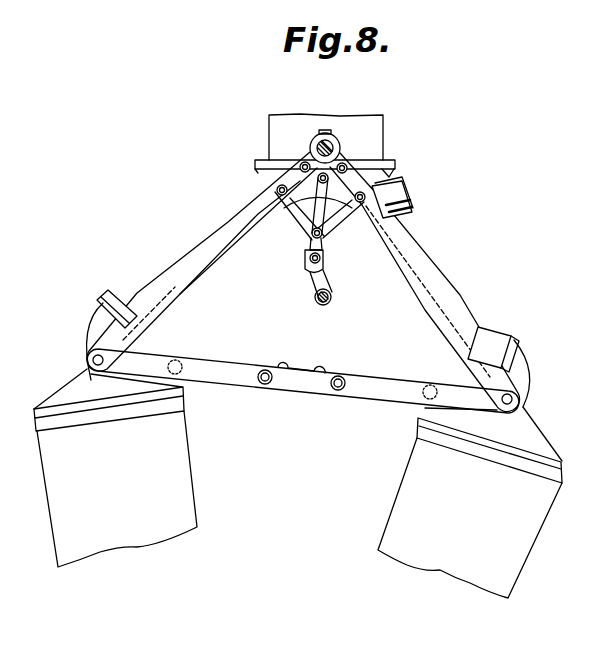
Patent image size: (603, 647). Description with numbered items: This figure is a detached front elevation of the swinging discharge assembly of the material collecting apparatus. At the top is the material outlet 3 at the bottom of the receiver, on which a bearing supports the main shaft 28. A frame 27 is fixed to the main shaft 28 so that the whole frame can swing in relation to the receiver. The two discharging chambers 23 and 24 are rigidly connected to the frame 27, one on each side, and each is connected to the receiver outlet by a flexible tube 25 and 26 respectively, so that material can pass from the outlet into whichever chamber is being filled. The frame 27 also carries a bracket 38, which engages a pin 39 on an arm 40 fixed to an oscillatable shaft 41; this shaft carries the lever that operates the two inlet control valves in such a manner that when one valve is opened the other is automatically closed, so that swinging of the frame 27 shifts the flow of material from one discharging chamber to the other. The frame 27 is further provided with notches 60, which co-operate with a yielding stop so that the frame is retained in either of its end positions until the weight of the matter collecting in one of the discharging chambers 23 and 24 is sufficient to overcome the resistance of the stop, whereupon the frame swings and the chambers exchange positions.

The material outlet 3 is at (273, 134).
The main shaft 28 is at (334, 145).
The bracket 38 is at (383, 188).
The frame 27 is at (223, 242).
The flexible tube 25 is at (165, 272).
The flexible tube 26 is at (458, 297).
The pin 39 is at (306, 271).
The arm 40 is at (317, 283).
The oscillatable shaft 41 is at (318, 304).
The notches 60 is at (320, 377).
The discharging chamber 23 is at (178, 502).
The discharging chamber 24 is at (415, 492).